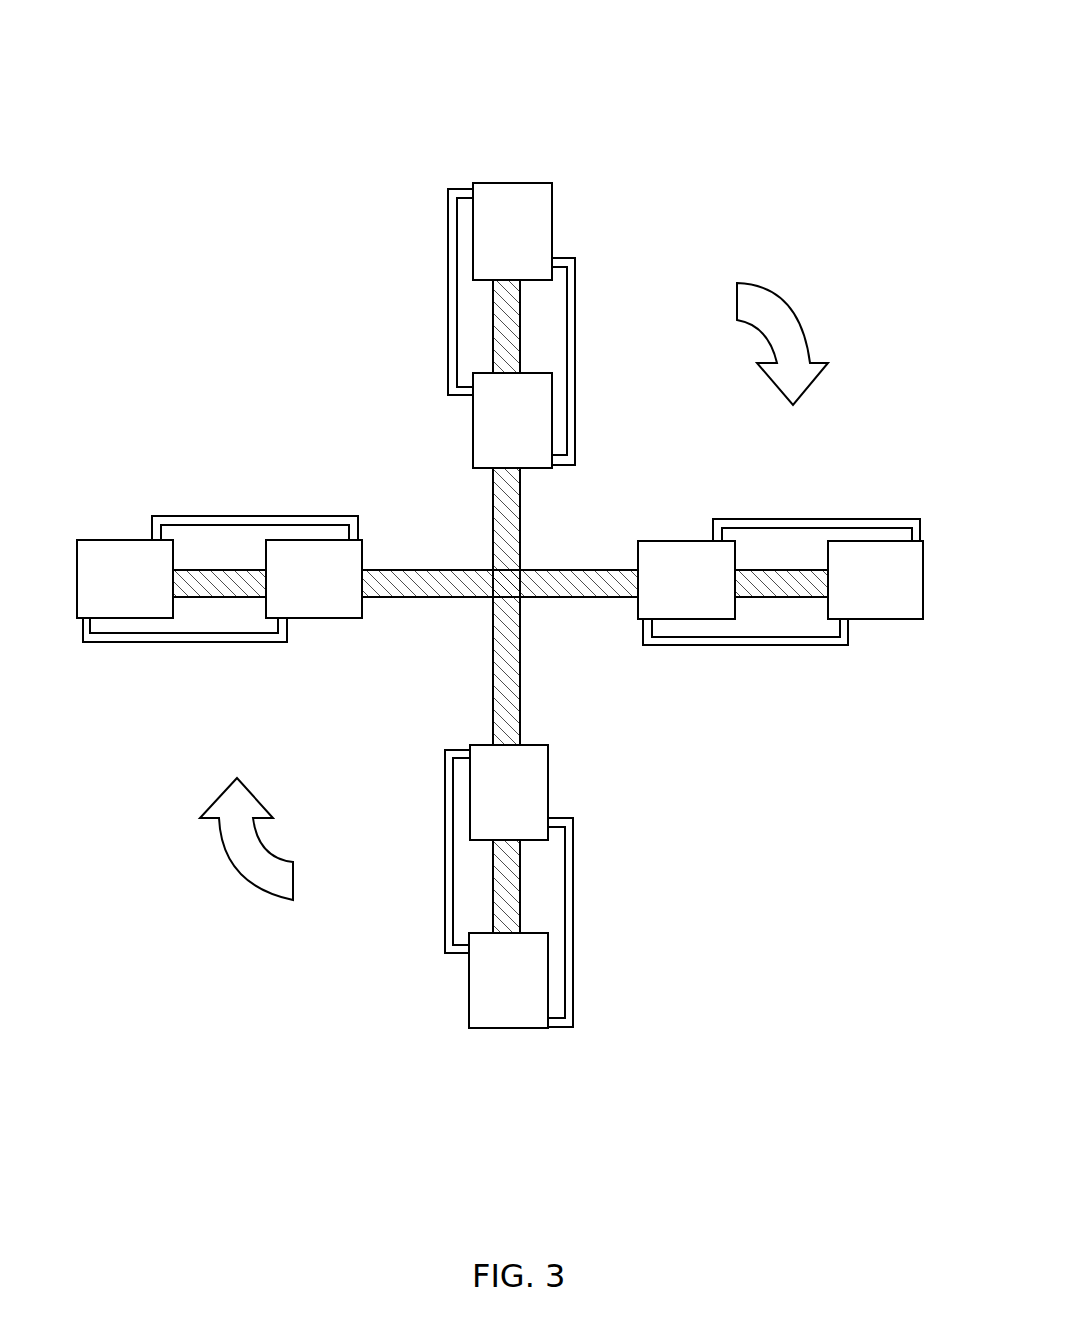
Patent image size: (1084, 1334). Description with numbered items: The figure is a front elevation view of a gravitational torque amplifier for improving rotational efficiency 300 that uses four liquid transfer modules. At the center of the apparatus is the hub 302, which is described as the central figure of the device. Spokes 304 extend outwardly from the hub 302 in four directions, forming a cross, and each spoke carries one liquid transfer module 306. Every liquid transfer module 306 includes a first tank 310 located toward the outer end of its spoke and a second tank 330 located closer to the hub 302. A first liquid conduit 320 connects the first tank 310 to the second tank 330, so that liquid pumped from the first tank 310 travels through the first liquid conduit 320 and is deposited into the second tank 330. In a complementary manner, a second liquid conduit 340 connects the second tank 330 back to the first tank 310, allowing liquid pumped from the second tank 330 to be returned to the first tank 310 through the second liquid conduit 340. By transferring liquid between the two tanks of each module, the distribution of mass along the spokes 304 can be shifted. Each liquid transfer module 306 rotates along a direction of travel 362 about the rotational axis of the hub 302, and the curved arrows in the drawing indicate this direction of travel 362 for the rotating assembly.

The gravitational torque amplifier for improving rotational efficiency 300 is at (872, 30).
The hub 302 is at (515, 585).
The spokes 304 is at (500, 547).
The liquid transfer module 306 is at (645, 212).
The first tank 310 is at (488, 183).
The first liquid conduit 320 is at (448, 297).
The second tank 330 is at (473, 452).
The second liquid conduit 340 is at (577, 380).
The direction of travel 362 is at (800, 322).